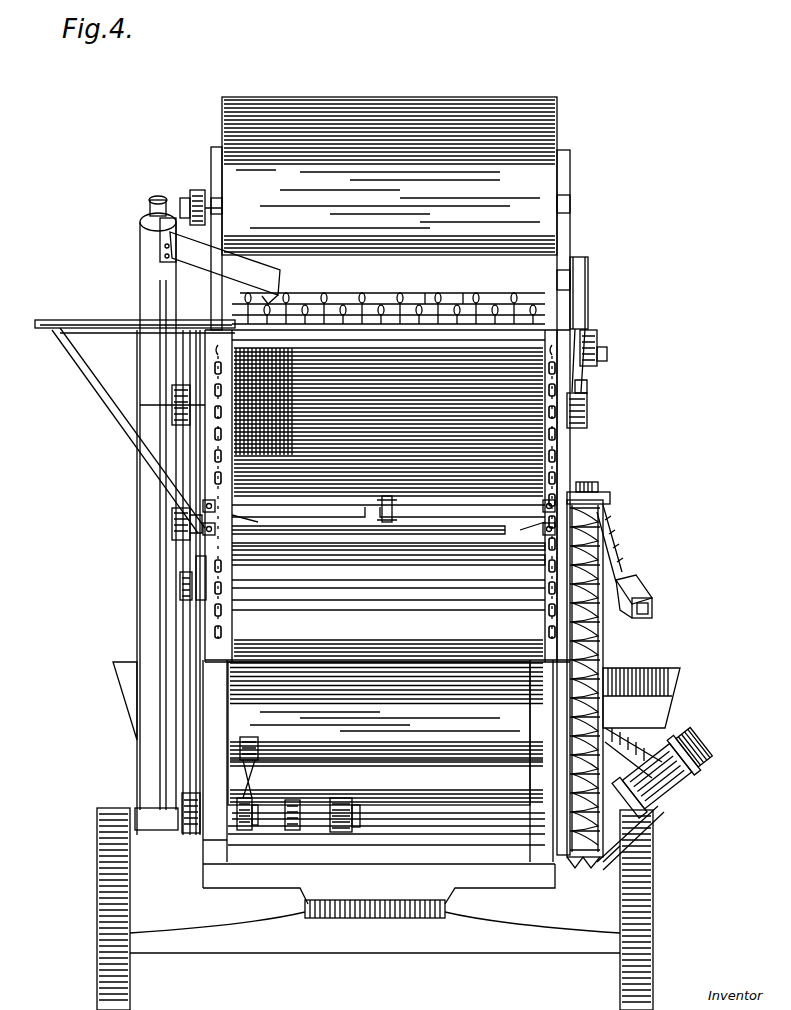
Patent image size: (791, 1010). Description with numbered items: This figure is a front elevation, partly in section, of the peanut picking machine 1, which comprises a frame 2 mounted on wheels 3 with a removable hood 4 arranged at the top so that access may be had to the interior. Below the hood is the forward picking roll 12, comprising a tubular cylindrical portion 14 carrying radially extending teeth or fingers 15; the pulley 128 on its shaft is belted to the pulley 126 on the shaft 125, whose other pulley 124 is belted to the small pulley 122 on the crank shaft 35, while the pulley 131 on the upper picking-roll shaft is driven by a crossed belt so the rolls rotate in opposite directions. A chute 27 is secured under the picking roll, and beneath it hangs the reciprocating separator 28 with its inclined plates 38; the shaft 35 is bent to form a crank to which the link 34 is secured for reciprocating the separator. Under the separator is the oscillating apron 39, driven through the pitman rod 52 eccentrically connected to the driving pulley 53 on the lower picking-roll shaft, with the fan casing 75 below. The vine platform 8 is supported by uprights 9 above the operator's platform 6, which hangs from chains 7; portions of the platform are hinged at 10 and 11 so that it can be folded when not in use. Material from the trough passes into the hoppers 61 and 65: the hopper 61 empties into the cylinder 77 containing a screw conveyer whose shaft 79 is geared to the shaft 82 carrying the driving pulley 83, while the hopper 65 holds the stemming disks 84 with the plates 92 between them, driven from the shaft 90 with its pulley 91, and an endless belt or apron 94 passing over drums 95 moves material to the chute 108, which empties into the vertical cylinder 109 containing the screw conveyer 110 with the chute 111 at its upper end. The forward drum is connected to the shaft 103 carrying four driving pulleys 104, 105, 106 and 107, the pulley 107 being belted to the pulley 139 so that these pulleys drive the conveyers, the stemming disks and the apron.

The machine 1 is at (390, 446).
The frame 2 is at (212, 848).
The wheels 3 is at (105, 905).
The removable hood 4 is at (517, 104).
The platform 6 is at (318, 658).
The chains 7 is at (548, 600).
The platform 8 is at (48, 320).
The uprights 9 is at (208, 567).
The hinge 10 is at (215, 322).
The hinge 11 is at (124, 334).
The picking roll 12 is at (468, 298).
The tubular cylindrical portion 14 is at (430, 296).
The teeth or fingers 15 is at (345, 320).
The chute 27 is at (396, 372).
The reciprocating separator 28 is at (340, 500).
The link 34 is at (390, 524).
The shaft 35 is at (492, 528).
The plate 38 is at (446, 490).
The oscillating apron 39 is at (356, 556).
The pitman rod 52 is at (608, 355).
The driving pulley 53 is at (598, 340).
The hopper 61 is at (120, 680).
The hopper 65 is at (680, 683).
The fan casing 75 is at (490, 715).
The cylinder 77 is at (140, 640).
The shaft 79 is at (175, 262).
The shaft 82 is at (466, 830).
The driving pulley 83 is at (355, 830).
The stemming disks 84 is at (656, 732).
The shaft 90 is at (420, 745).
The driving pulley 91 is at (258, 752).
The metal strips or plates 92 is at (692, 782).
The endless belt or apron 94 is at (684, 802).
The drums 95 is at (705, 748).
The shaft 103 is at (476, 816).
The driving pulley 104 is at (355, 810).
The driving pulley 105 is at (305, 808).
The driving pulley 106 is at (258, 805).
The driving pulley 107 is at (160, 810).
The chute 108 is at (620, 855).
The vertical cylinder 109 is at (607, 632).
The screw conveyer 110 is at (608, 645).
The chute 111 is at (635, 586).
The small pulley 122 is at (172, 522).
The pulley 124 is at (175, 392).
The shaft 125 is at (255, 408).
The pulley 126 is at (590, 420).
The pulley 128 is at (590, 268).
The pulley 131 is at (195, 196).
The pulley 139 is at (190, 591).